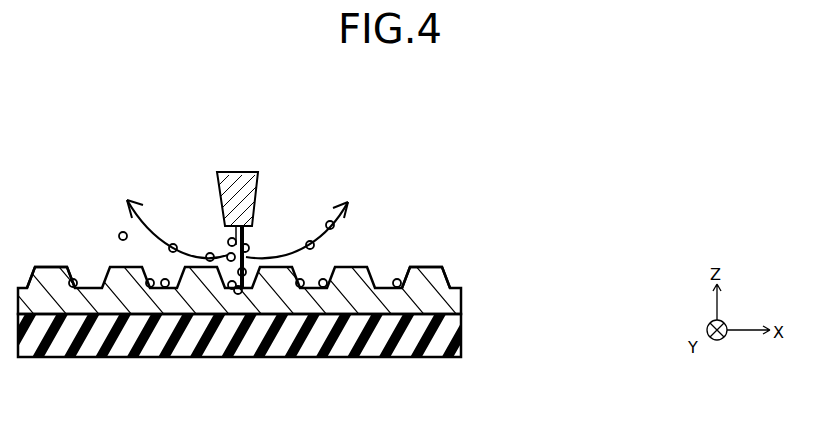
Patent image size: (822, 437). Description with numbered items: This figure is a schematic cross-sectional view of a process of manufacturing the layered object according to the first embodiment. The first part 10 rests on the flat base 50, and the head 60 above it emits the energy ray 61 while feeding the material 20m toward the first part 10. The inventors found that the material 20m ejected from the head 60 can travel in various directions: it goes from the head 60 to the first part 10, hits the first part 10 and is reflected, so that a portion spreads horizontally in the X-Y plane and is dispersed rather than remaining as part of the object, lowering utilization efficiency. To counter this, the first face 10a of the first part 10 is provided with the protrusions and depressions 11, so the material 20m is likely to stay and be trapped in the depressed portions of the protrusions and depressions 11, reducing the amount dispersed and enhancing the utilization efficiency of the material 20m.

The first part 10 is at (450, 302).
The first face 10a is at (424, 268).
The protrusions and depressions 11 is at (50, 267).
The base 50 is at (452, 333).
The head 60 is at (254, 194).
The energy ray 61 is at (230, 240).
The material 20m is at (119, 236).